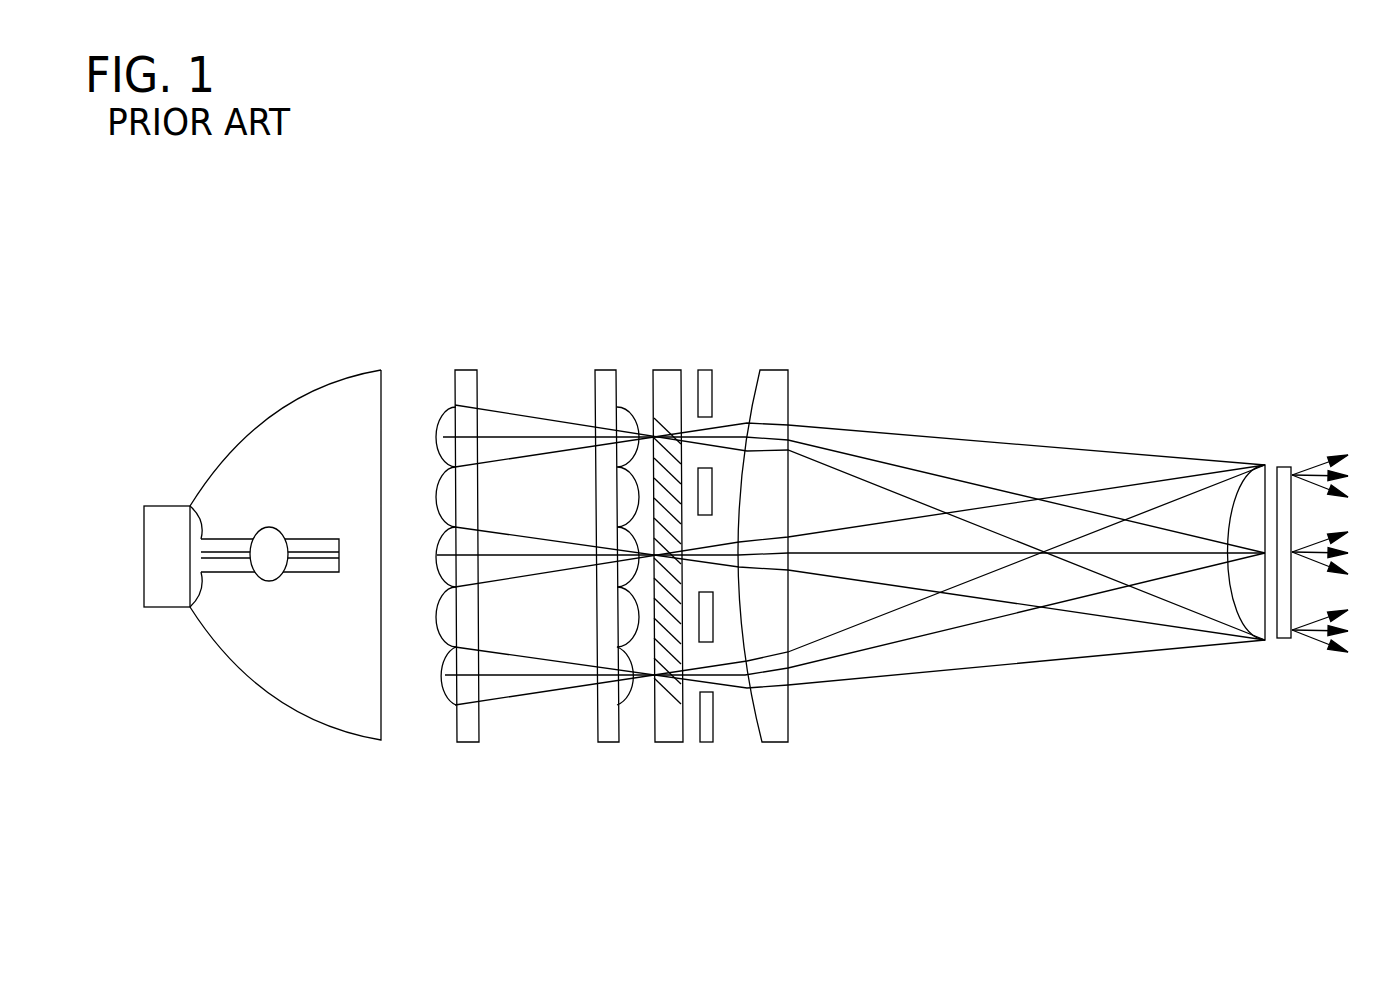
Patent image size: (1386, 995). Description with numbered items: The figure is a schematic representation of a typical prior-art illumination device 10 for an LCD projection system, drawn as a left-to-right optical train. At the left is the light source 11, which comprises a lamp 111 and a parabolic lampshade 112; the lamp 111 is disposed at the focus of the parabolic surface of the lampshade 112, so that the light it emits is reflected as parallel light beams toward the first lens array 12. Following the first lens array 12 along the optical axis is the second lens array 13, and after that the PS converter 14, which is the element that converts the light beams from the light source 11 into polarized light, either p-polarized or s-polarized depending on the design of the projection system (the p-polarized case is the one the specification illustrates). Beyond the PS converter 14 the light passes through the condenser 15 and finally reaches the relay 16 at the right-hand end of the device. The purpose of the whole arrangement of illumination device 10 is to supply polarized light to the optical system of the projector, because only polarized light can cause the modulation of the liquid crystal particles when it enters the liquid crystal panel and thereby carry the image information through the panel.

The illumination device 10 is at (871, 427).
The light source 11 is at (255, 494).
The lamp 111 is at (227, 573).
The parabolic lampshade 112 is at (284, 412).
The first lens array 12 is at (467, 368).
The second lens array 13 is at (607, 368).
The PS converter 14 is at (663, 330).
The condenser 15 is at (773, 368).
The relay 16 is at (1246, 428).